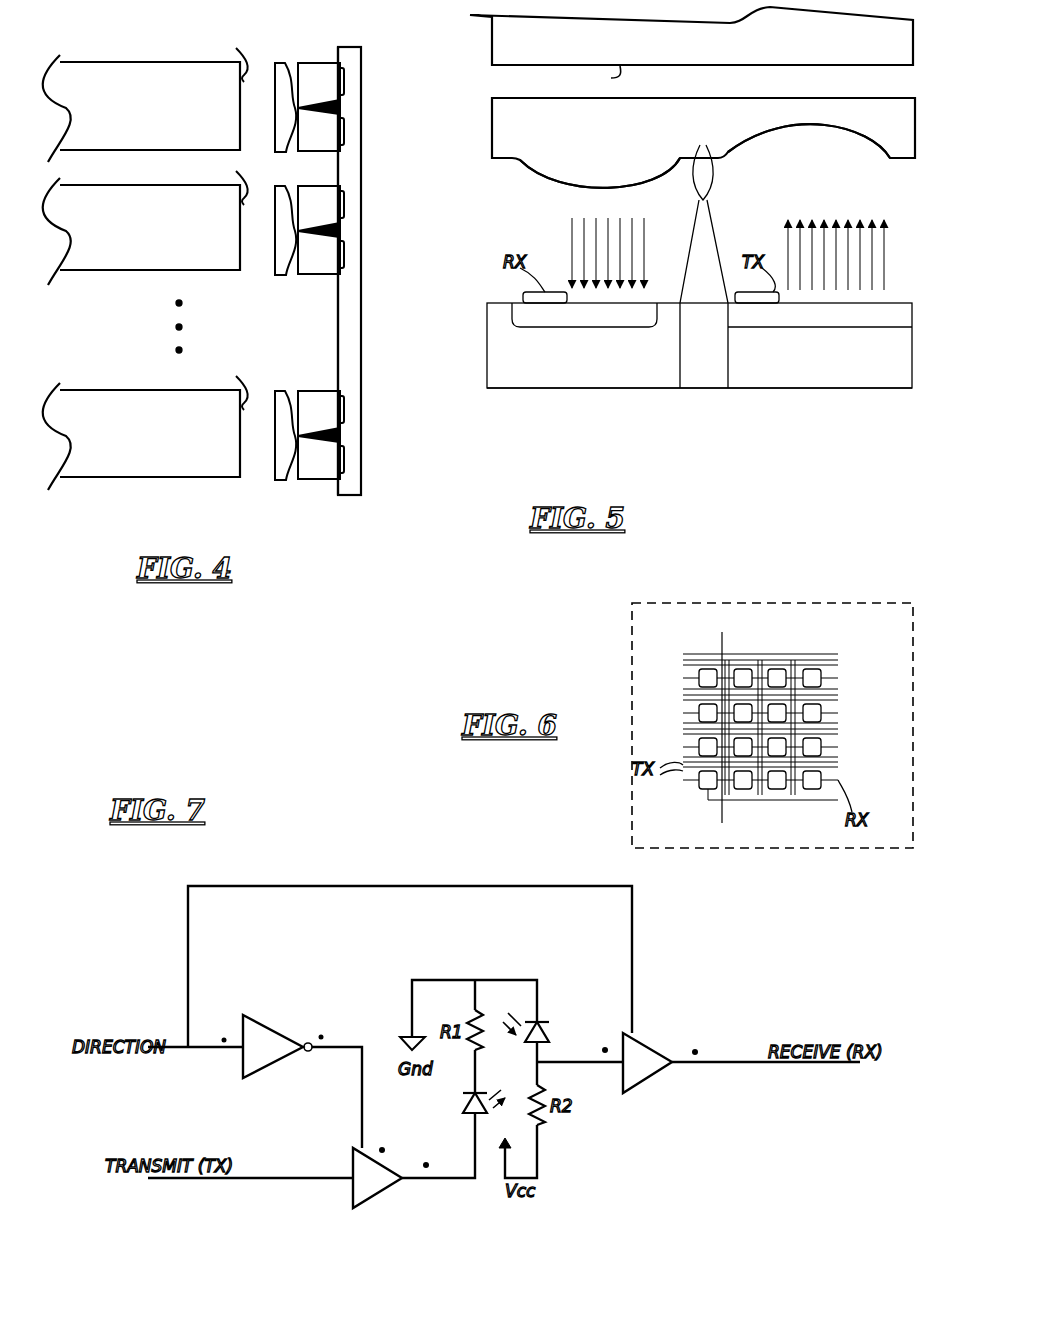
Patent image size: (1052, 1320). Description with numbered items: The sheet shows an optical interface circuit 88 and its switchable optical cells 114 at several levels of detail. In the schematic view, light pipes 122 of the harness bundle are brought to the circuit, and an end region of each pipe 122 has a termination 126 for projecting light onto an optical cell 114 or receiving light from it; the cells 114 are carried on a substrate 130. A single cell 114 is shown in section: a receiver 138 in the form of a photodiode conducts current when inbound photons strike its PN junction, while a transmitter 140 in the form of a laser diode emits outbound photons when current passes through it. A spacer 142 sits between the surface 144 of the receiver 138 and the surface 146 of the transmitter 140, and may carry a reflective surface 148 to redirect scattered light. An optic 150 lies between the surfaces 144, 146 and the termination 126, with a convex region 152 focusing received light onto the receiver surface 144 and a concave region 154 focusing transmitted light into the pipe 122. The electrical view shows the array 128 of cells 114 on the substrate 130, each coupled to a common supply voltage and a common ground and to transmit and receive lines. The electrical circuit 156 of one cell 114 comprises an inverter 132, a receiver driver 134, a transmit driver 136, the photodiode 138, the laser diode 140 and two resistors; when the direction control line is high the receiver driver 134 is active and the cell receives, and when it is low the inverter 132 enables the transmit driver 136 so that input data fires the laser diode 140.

In FIG. 4, the optical interface circuit 88 is at (350, 45).
In FIG. 5, the optical interface circuit 88 is at (485, 335).
In FIG. 6, the optical interface circuit 88 is at (848, 665).
In FIG. 7, the optical interface circuit 88 is at (706, 1160).
In FIG. 4, the optical cell 114 is at (348, 113).
In FIG. 5, the optical cell 114 is at (875, 422).
In FIG. 6, the optical cell 114 is at (812, 669).
In FIG. 7, the optical cell 114 is at (652, 1198).
In FIG. 4, the light pipe 122 is at (110, 62).
In FIG. 5, the light pipe 122 is at (691, 36).
In FIG. 4, the termination 126 is at (225, 219).
In FIG. 5, the termination 126 is at (600, 78).
In FIG. 6, the array 128 is at (696, 648).
In FIG. 4, the substrate 130 is at (345, 495).
In FIG. 5, the substrate 130 is at (487, 380).
In FIG. 6, the substrate 130 is at (632, 620).
In FIG. 7, the inverter 132 is at (260, 1022).
In FIG. 7, the receiver driver 134 is at (665, 1033).
In FIG. 7, the transmit driver 136 is at (368, 1206).
In FIG. 5, the receiver 138 is at (559, 391).
In FIG. 7, the receiver 138 is at (542, 1019).
In FIG. 5, the transmitter 140 is at (791, 391).
In FIG. 7, the transmitter 140 is at (461, 1109).
In FIG. 5, the spacer 142 is at (697, 370).
In FIG. 5, the surface of receiver 144 is at (649, 303).
In FIG. 5, the surface of transmitter 146 is at (888, 303).
In FIG. 5, the reflective surface 148 is at (709, 150).
In FIG. 5, the optic 150 is at (489, 96).
In FIG. 5, the convex region 152 is at (532, 178).
In FIG. 5, the concave region 154 is at (801, 128).
In FIG. 7, the electrical circuit 156 is at (330, 866).